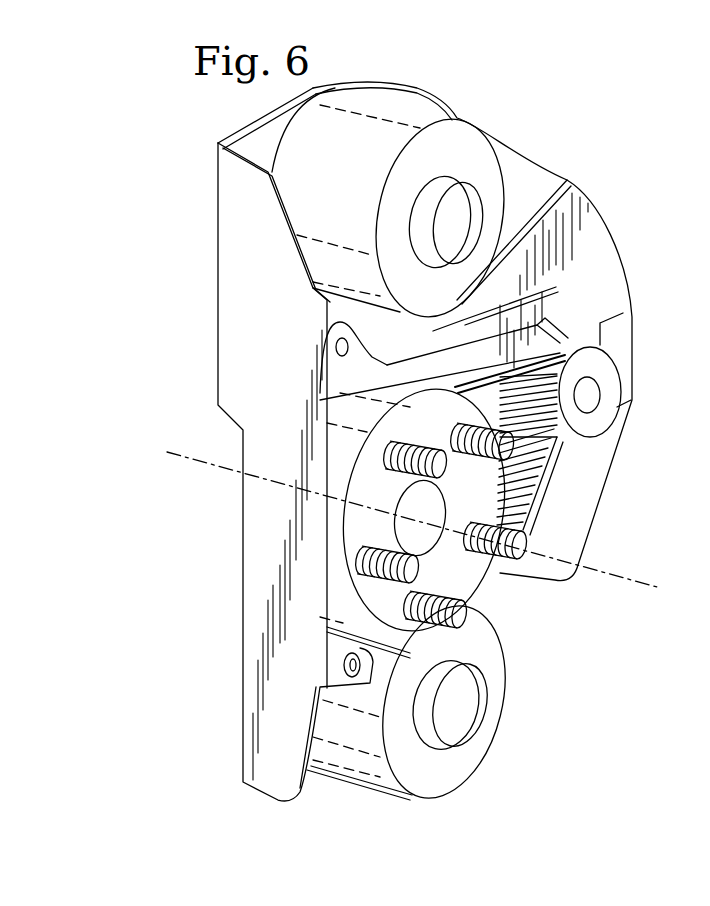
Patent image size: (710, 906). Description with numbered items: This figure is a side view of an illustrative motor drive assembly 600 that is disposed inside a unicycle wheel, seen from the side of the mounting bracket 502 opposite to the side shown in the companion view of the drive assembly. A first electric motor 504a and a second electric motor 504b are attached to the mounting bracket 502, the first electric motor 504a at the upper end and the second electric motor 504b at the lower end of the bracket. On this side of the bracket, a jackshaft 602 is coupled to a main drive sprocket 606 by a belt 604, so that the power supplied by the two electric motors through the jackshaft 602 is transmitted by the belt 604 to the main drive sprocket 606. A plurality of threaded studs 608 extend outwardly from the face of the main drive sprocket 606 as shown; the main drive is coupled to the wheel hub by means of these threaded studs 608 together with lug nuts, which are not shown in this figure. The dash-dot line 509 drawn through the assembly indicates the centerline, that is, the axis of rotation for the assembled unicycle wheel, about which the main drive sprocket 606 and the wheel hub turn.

The motor drive assembly 600 is at (620, 98).
The mounting bracket 502 is at (279, 337).
The first electric motor 504a is at (362, 166).
The second electric motor 504b is at (460, 782).
The jackshaft 602 is at (603, 373).
The belt 604 is at (465, 362).
The main drive sprocket 606 is at (487, 501).
The threaded studs 608 is at (372, 552).
The centerline 509 is at (622, 574).